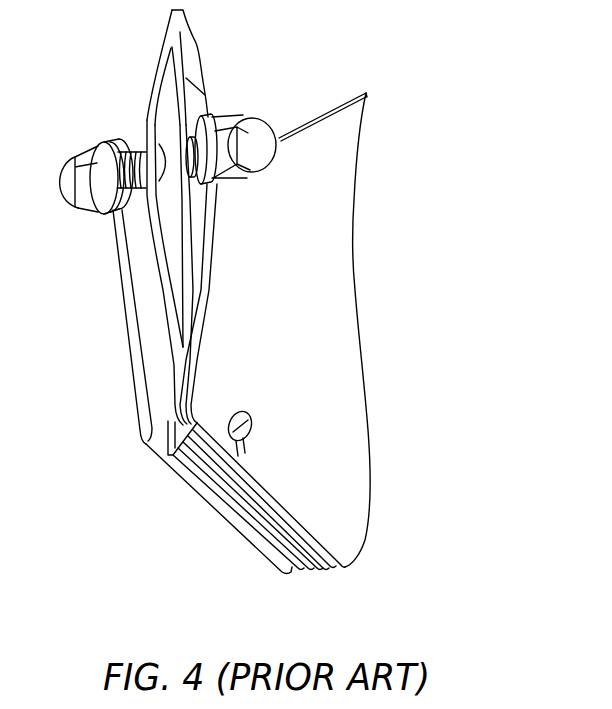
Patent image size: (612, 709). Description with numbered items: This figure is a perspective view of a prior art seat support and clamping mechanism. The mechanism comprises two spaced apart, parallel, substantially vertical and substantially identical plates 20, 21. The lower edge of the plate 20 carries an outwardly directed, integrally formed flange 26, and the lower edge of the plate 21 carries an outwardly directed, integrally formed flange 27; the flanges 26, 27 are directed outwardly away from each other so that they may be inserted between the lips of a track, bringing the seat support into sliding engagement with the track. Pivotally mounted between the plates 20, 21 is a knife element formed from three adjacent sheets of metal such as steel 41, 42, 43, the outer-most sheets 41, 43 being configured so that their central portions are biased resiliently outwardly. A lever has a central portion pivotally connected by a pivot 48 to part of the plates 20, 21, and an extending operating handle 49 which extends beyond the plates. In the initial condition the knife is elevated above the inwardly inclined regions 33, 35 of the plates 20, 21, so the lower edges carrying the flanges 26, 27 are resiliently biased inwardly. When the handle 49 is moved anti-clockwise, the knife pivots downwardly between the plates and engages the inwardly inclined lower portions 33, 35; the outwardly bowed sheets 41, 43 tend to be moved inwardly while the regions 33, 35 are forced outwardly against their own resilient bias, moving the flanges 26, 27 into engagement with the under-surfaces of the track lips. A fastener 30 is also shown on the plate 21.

The plate 20 is at (153, 288).
The plate 21 is at (340, 291).
The flange 26 is at (280, 576).
The flange 27 is at (336, 569).
The fastener stud 30 is at (253, 425).
The inwardly inclined region 33 is at (140, 245).
The inwardly inclined region 35 is at (208, 254).
The sheet of metal 41 is at (302, 572).
The sheet of metal 42 is at (313, 571).
The sheet of metal 43 is at (323, 571).
The pivot 48 is at (257, 137).
The operating handle 49 is at (190, 51).